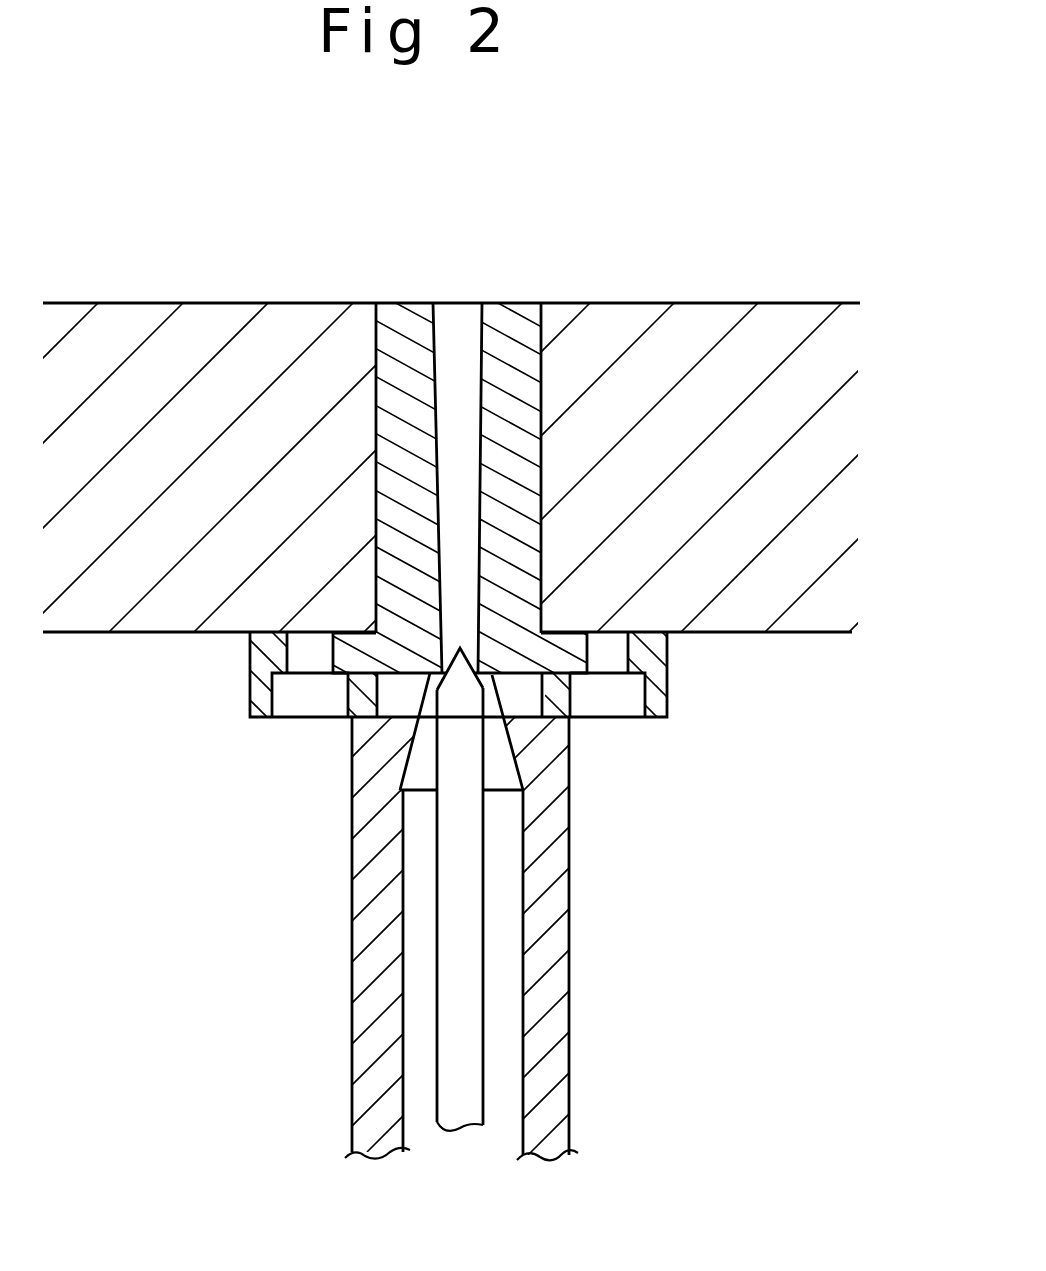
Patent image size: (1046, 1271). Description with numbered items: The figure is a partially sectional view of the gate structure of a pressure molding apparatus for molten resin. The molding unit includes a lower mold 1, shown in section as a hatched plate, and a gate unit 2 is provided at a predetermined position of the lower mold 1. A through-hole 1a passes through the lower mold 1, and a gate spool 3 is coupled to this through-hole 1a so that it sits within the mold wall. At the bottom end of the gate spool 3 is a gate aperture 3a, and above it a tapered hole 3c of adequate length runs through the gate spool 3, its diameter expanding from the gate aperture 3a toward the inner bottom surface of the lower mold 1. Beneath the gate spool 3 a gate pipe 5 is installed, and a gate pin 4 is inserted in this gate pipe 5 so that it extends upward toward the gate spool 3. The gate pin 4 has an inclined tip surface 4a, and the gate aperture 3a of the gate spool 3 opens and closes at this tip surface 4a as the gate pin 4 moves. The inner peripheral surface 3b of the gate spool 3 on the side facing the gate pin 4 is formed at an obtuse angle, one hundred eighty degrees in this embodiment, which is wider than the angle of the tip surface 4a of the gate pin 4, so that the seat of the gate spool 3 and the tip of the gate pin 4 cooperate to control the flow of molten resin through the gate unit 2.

The lower mold 1 is at (255, 348).
The through-hole 1a is at (537, 393).
The gate unit 2 is at (520, 698).
The gate spool 3 is at (549, 458).
The gate aperture 3a is at (478, 638).
The inner peripheral surface 3b is at (405, 683).
The tapered hole 3c is at (480, 382).
The gate pin 4 is at (431, 888).
The tip surface 4a is at (440, 645).
The gate pipe 5 is at (552, 1112).